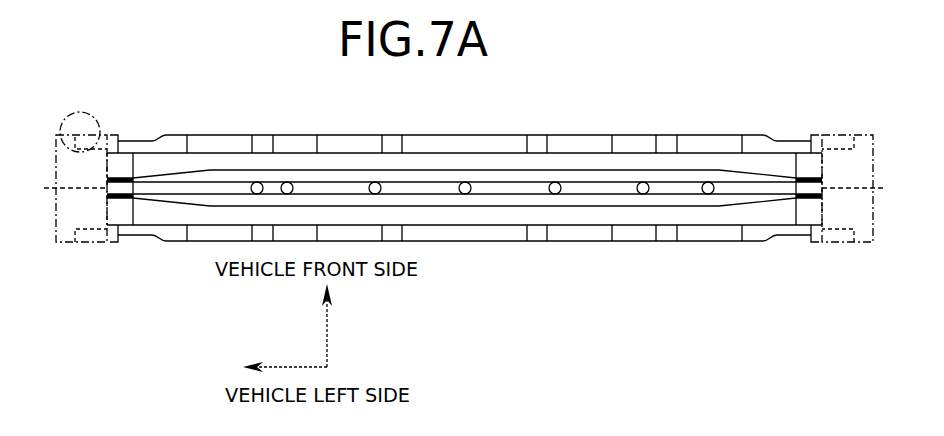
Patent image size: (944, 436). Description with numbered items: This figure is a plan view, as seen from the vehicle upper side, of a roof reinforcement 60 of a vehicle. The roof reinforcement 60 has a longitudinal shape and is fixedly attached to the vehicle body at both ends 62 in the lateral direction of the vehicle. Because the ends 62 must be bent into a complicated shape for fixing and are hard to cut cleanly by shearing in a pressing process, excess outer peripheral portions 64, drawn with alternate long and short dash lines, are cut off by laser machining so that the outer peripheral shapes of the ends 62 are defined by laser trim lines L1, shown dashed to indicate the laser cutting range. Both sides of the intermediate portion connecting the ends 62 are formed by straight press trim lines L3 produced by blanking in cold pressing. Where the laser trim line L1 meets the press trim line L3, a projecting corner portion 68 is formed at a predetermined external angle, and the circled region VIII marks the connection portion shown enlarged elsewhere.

The roof reinforcement 60 is at (684, 112).
The ends 62 is at (111, 265).
The excess outer peripheral portions 64 is at (62, 167).
The projecting corner portion 68 is at (77, 140).
The laser trim line L1 is at (466, 192).
The press trim line L3 is at (508, 133).
The detail view indicator circle VIII is at (94, 123).